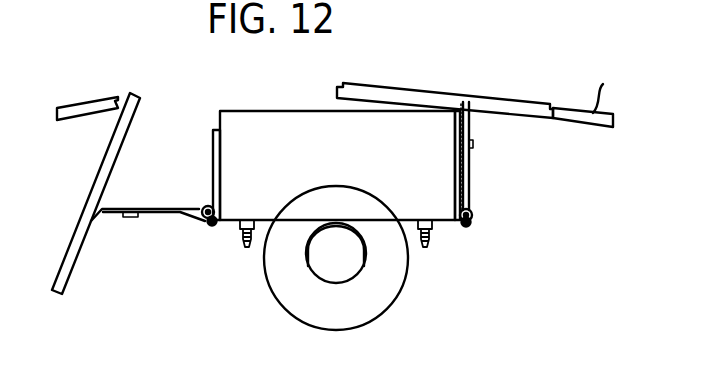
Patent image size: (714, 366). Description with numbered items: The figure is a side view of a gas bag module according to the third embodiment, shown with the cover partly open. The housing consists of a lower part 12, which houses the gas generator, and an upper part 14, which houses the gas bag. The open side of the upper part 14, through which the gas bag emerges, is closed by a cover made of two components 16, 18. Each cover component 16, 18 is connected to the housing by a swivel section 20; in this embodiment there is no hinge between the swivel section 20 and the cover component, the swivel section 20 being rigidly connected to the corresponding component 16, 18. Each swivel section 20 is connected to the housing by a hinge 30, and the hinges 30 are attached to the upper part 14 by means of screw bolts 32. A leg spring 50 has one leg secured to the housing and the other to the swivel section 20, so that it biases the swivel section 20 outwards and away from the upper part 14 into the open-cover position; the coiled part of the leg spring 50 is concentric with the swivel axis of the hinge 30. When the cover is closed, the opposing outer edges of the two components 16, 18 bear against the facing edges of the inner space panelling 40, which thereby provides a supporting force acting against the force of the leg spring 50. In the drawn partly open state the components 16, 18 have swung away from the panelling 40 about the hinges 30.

The lower part 12 is at (385, 287).
The upper part 14 is at (336, 140).
The cover component 16 is at (100, 165).
The cover component 18 is at (488, 94).
The swivel section 20 is at (118, 208).
The hinge 30 is at (211, 227).
The screw bolt 32 is at (431, 236).
The inner space panelling 40 is at (73, 109).
The leg spring 50 is at (168, 213).